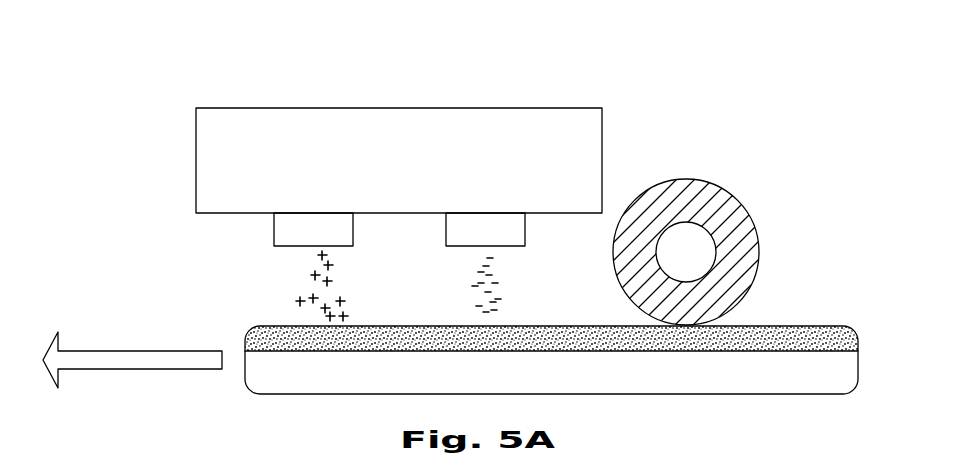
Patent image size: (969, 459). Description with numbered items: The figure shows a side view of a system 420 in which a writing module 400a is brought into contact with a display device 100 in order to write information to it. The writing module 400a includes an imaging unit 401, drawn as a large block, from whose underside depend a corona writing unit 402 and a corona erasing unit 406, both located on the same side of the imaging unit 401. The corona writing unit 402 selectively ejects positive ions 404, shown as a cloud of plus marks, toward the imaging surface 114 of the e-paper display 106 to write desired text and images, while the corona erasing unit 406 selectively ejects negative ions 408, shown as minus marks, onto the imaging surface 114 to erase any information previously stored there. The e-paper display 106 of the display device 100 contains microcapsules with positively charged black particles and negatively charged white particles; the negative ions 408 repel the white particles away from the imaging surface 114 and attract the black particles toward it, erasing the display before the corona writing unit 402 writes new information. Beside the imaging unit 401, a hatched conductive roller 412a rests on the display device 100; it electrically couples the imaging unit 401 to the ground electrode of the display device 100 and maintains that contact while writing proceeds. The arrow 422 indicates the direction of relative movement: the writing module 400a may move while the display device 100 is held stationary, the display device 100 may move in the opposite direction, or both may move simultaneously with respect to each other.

The system 420 is at (690, 93).
The imaging unit 401 is at (323, 108).
The writing module 400a is at (612, 173).
The corona writing unit 402 is at (353, 228).
The positive ions 404 is at (322, 252).
The corona erasing unit 406 is at (525, 230).
The negative ions 408 is at (490, 266).
The conductive roller 412a is at (733, 193).
The imaging surface 114 is at (793, 326).
The e-paper display 106 is at (823, 338).
The display device 100 is at (863, 365).
The arrow 422 is at (128, 351).